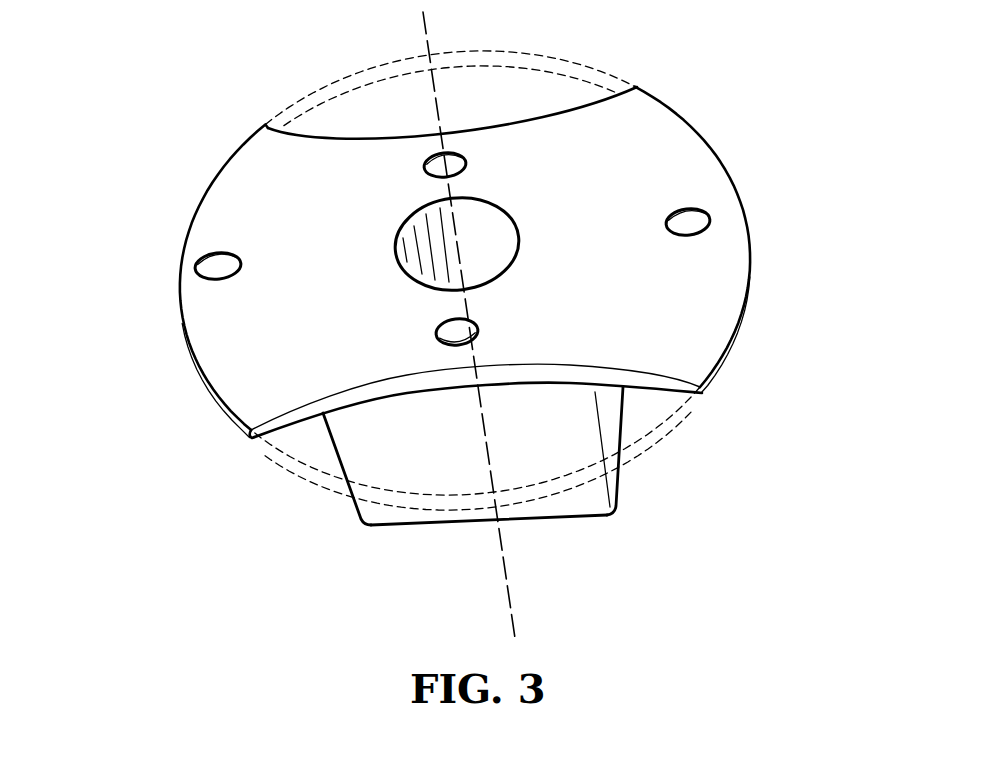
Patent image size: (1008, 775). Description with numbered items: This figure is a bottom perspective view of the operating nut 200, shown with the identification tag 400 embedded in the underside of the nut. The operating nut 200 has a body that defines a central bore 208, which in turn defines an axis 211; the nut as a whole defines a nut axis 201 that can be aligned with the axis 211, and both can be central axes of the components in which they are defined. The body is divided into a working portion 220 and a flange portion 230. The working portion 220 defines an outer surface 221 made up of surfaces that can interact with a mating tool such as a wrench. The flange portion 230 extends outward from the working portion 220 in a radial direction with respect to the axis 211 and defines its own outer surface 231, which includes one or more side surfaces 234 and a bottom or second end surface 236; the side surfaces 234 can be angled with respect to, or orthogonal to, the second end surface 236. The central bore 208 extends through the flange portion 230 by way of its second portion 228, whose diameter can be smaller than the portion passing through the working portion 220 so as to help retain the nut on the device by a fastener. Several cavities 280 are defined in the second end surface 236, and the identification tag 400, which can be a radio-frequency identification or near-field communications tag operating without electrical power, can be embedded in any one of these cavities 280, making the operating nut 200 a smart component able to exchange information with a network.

The operating nut 200 is at (121, 68).
The nut axis 201 is at (427, 27).
The bore axis 211 is at (476, 288).
The central bore 208 is at (502, 245).
The second portion of the central bore 228 is at (426, 245).
The working portion 220 is at (347, 462).
The outer surface of the working portion 221 is at (572, 503).
The flange portion 230 is at (688, 328).
The outer surface of the flange portion 231 is at (725, 277).
The side surface of the flange portion 234 is at (523, 378).
The second end surface 236 is at (235, 370).
The cavities 280 is at (215, 268).
The identification tag 400 is at (460, 332).